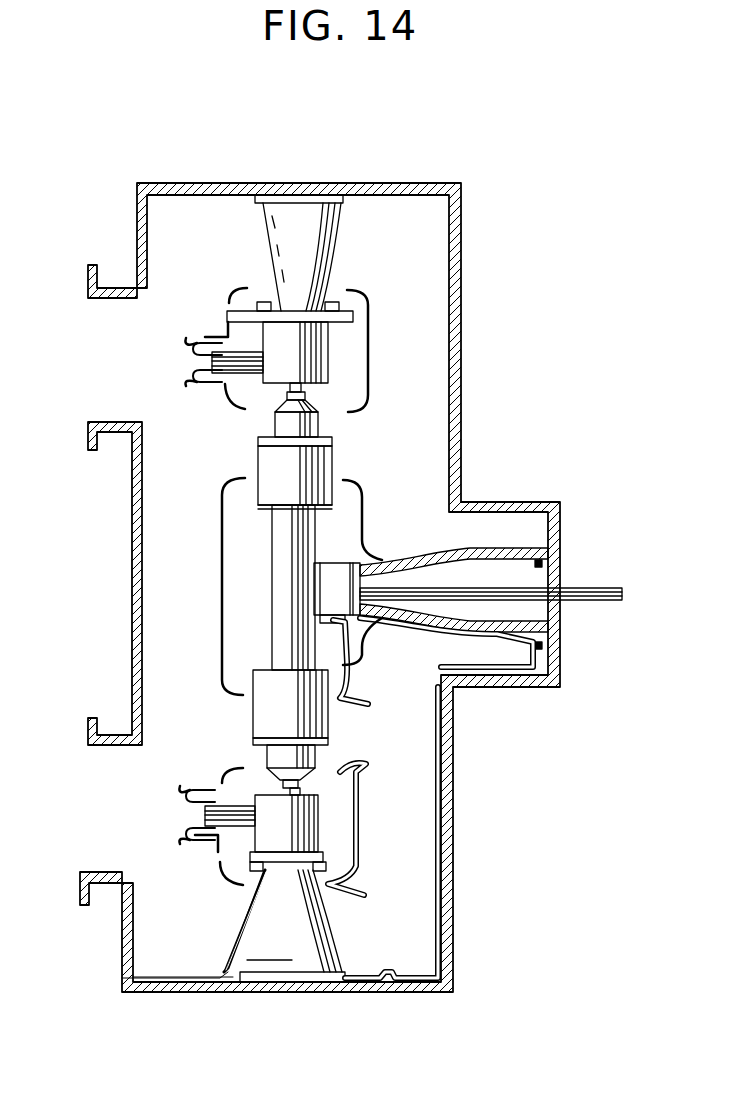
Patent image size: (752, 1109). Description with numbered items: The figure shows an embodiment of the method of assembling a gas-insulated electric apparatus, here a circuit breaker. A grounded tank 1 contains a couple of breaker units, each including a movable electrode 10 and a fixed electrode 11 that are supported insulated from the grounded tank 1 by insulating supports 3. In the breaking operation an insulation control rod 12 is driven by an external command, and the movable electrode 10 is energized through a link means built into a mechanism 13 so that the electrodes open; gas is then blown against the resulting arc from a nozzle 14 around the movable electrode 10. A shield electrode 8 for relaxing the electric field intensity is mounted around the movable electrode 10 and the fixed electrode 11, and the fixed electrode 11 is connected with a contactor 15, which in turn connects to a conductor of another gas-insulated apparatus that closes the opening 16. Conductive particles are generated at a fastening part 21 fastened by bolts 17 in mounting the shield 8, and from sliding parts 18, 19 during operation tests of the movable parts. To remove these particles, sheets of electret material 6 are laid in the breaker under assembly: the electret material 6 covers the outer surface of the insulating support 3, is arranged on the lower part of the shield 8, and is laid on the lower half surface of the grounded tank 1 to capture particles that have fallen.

The grounded tank 1 is at (132, 580).
The insulating support 3 is at (262, 238).
The electret material 6 is at (423, 630).
The shield electrode 8 is at (226, 323).
The movable electrode 10 is at (262, 465).
The fixed electrode 11 is at (330, 362).
The insulation control rod 12 is at (598, 588).
The mechanism 13 is at (285, 612).
The nozzle 14 is at (277, 425).
The contactor 15 is at (215, 385).
The opening 16 is at (115, 360).
The bolt 17 is at (262, 301).
The sliding part 18 is at (308, 397).
The sliding part 19 is at (322, 513).
The fastening part 21 is at (328, 291).